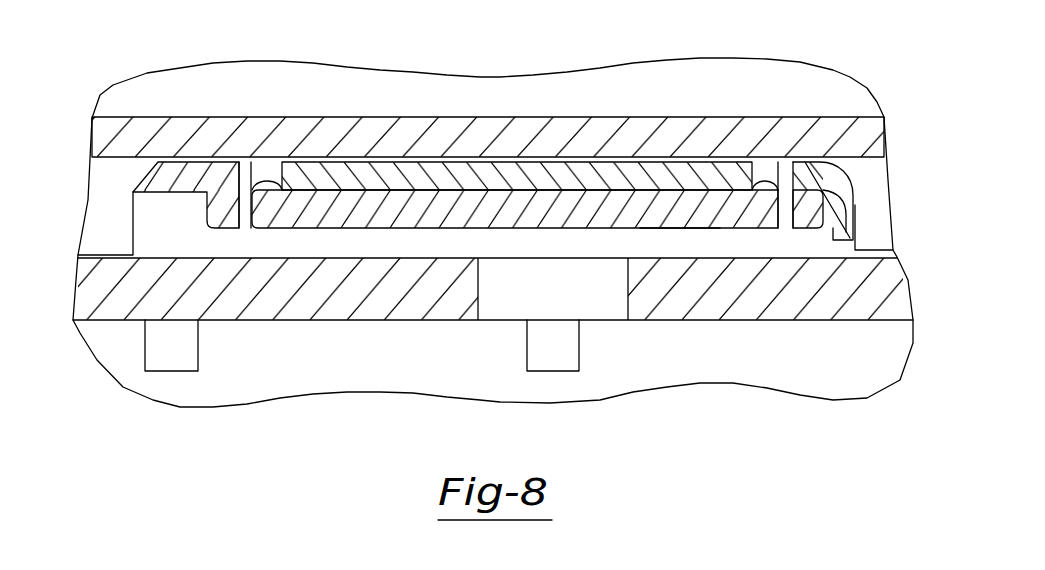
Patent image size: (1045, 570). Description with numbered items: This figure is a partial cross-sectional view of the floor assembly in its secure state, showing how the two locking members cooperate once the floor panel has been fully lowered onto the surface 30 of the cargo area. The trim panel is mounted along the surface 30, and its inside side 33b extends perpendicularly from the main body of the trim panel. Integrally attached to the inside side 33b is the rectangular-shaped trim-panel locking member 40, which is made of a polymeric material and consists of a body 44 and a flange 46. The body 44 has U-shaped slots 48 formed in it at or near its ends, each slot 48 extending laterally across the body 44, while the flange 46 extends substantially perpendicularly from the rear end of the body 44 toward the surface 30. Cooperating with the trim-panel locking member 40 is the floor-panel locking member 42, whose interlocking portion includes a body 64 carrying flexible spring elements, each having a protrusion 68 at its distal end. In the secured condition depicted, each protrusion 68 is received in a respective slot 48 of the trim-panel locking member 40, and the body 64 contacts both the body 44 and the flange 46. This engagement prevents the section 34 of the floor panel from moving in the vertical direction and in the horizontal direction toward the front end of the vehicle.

The surface 30 is at (243, 258).
The inside side 33b is at (878, 186).
The section 34 is at (855, 128).
The trim-panel locking member 40 is at (583, 174).
The floor-panel locking member 42 is at (673, 228).
The body 44 is at (530, 172).
The flange 46 is at (838, 233).
The U-shaped slot 48 is at (255, 176).
The body 64 is at (220, 212).
The protrusion 68 is at (270, 178).